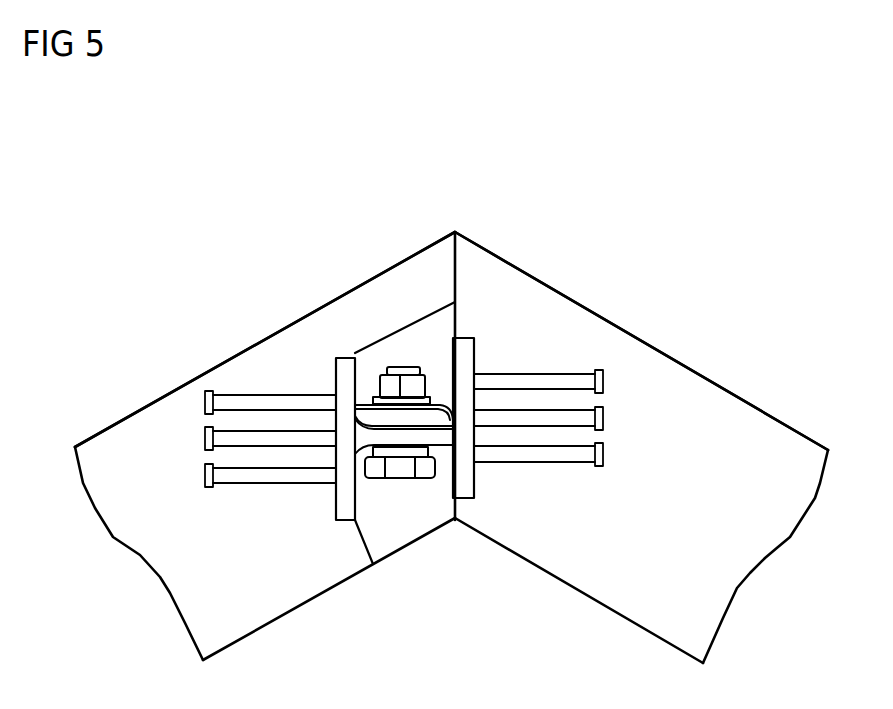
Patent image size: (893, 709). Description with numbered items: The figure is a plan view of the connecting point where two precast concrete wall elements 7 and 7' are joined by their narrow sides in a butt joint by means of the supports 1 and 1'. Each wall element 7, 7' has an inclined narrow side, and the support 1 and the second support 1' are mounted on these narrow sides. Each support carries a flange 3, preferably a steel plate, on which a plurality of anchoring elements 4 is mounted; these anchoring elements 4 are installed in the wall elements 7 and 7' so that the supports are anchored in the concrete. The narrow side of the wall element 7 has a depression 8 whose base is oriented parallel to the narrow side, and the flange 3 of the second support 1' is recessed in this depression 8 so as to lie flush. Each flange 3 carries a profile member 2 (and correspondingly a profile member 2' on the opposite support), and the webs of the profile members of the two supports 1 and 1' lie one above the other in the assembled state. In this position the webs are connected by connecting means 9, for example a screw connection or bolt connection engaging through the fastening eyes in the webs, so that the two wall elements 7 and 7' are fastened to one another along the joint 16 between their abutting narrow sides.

The support 1 is at (641, 558).
The second support 1' is at (265, 554).
The profile member 2 is at (641, 322).
The shell wall of second segment 2' is at (265, 455).
The flange 3 is at (337, 487).
The anchoring elements 4 is at (240, 403).
The precast concrete wall element 7 is at (641, 338).
The wall element 7' is at (256, 339).
The depression 8 is at (402, 520).
The connecting means 9 is at (390, 374).
The joint edge 16 is at (458, 231).